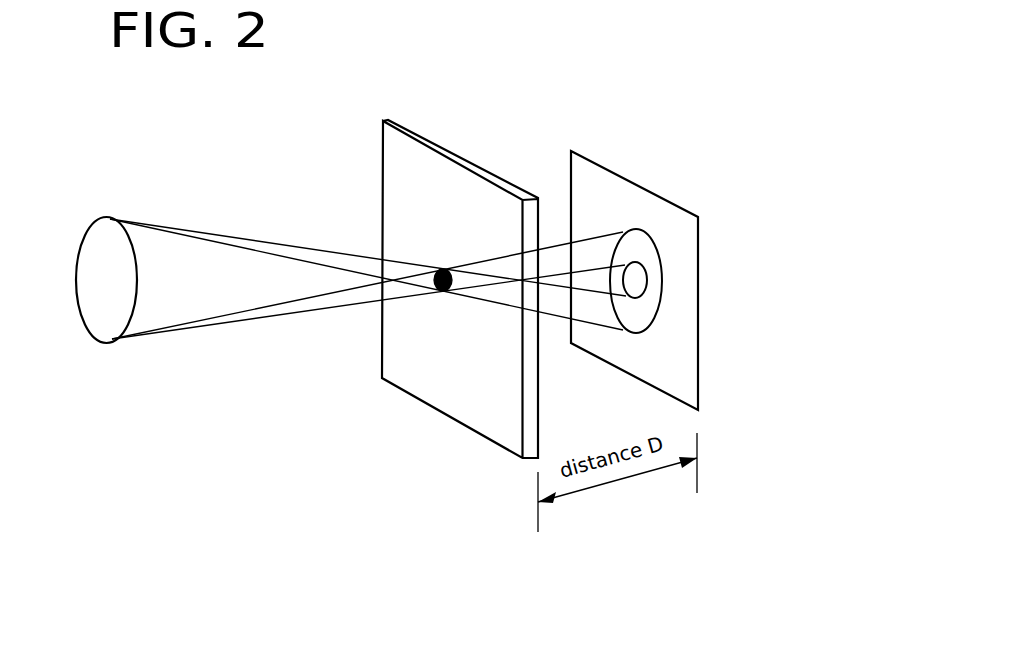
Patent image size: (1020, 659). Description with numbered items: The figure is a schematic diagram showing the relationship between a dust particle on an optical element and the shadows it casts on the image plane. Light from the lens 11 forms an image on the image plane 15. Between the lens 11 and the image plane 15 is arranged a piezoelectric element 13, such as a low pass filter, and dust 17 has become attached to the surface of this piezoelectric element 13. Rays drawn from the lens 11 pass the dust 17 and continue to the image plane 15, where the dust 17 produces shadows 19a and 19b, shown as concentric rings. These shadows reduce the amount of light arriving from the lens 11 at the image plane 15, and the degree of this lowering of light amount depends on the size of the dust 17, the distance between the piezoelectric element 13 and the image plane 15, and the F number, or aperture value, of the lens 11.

The lens 11 is at (82, 242).
The piezoelectric element 13 is at (422, 130).
The image plane 15 is at (598, 178).
The dust 17 is at (443, 269).
The shadow 19a is at (658, 257).
The shadow 19b is at (647, 285).